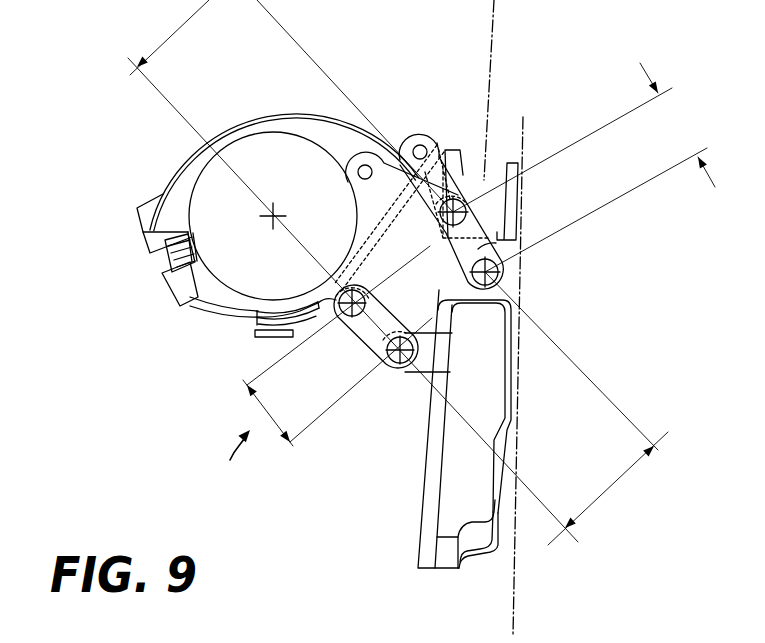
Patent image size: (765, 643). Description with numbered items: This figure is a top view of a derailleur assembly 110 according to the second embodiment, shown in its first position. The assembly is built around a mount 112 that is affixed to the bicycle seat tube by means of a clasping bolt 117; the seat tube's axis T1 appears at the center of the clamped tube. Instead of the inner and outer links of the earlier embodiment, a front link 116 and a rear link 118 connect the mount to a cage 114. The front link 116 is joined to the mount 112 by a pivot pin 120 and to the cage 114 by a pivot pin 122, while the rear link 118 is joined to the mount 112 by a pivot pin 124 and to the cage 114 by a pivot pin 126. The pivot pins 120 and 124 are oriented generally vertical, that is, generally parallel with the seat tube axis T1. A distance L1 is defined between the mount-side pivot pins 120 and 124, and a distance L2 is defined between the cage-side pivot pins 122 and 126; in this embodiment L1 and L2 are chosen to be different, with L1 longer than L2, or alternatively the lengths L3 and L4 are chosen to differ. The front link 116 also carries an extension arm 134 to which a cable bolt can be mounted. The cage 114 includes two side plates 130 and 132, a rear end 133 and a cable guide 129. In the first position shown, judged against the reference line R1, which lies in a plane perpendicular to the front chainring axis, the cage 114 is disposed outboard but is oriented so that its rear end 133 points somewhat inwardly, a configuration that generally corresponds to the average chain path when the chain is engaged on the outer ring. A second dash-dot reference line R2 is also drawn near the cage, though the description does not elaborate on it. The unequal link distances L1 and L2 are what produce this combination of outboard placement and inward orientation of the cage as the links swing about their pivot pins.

The derailleur assembly 110 is at (220, 456).
The mount 112 is at (192, 169).
The cage 114 is at (508, 285).
The front link 116 is at (478, 249).
The clasping bolt 117 is at (147, 216).
The rear link 118 is at (376, 340).
The pivot pin 120 is at (440, 204).
The pivot pin 122 is at (498, 272).
The pivot pin 124 is at (350, 322).
The pivot pin 126 is at (400, 366).
The cable guide 129 is at (256, 326).
The side plate 130 is at (500, 533).
The side plate 132 is at (421, 529).
The rear end 133 is at (420, 571).
The extension arm 134 is at (416, 131).
The seat tube axis T1 is at (275, 217).
The reference line R1 is at (523, 128).
The second reference line R2 is at (492, 42).
The distance L1 is at (169, 37).
The distance L2 is at (608, 488).
The length L3 is at (337, 346).
The length L4 is at (584, 167).